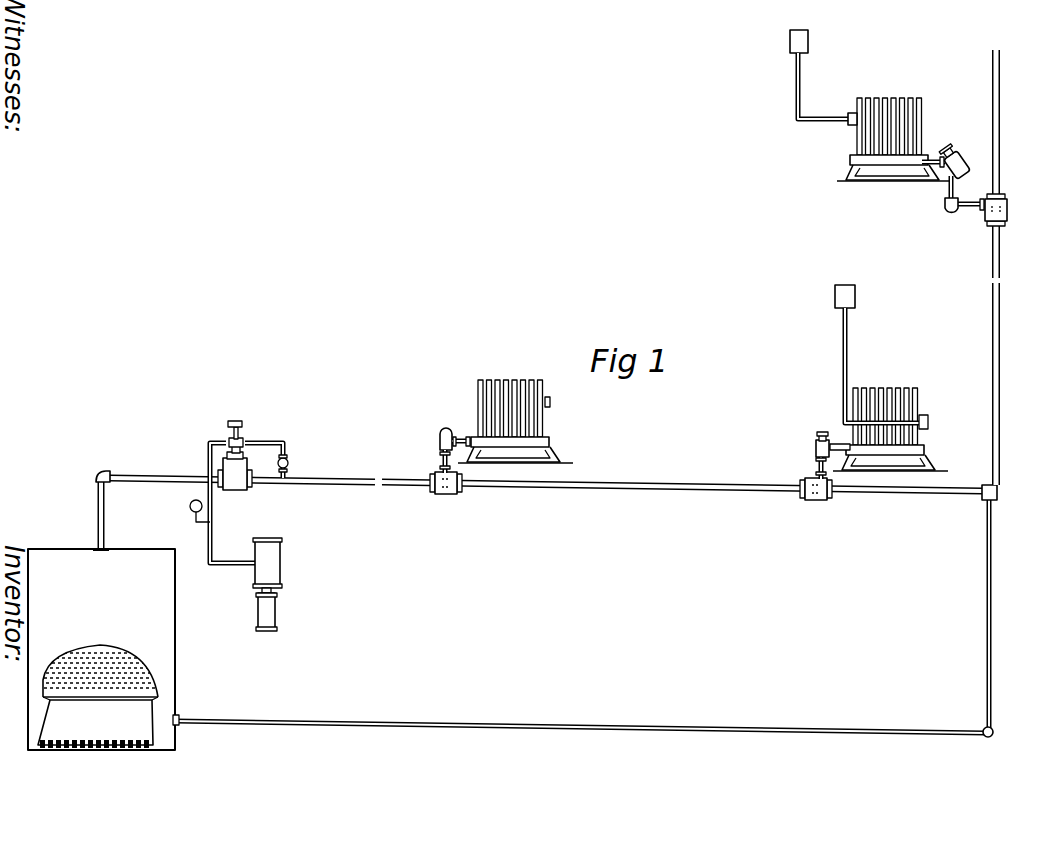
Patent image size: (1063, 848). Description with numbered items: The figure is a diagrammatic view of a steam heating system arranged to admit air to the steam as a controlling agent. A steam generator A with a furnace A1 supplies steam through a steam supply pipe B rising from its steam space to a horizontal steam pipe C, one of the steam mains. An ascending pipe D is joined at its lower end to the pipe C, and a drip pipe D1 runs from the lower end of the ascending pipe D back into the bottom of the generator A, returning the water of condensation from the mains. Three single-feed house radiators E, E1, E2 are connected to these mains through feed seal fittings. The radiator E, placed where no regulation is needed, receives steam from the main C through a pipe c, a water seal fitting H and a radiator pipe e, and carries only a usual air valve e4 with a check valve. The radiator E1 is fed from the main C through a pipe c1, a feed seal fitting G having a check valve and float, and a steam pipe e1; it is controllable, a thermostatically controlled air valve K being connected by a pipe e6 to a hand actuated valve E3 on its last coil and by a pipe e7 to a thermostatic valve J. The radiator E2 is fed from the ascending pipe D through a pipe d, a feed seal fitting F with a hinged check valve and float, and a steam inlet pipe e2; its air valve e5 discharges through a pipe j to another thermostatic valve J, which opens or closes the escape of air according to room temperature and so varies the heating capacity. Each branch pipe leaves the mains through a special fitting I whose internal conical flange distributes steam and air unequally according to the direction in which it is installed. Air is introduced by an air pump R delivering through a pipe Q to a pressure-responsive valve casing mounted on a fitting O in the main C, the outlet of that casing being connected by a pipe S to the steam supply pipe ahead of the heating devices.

The steam generator A is at (101, 649).
The furnace A1 is at (99, 696).
The steam supply pipe B is at (105, 519).
The horizontal steam pipe C is at (153, 476).
The fitting O is at (234, 490).
The pipe Q is at (210, 446).
The pipe S is at (265, 443).
The air pump R is at (282, 564).
The fitting I is at (448, 496).
The water seal fitting H is at (440, 437).
The pipe c is at (440, 458).
The radiator pipe e is at (465, 438).
The radiator E is at (515, 407).
The air valve e4 is at (551, 402).
The radiator E1 is at (900, 392).
The steam pipe e1 is at (834, 445).
The pipe c1 is at (820, 470).
The feed seal fitting G is at (816, 442).
The hand actuated valve E3 is at (928, 420).
The pipe e6 is at (924, 437).
The pipe e7 is at (848, 352).
The thermostatically controlled air valve K is at (924, 440).
The thermostatic valve J is at (790, 45).
The pipe j is at (822, 121).
The air valve e5 is at (852, 113).
The radiator E2 is at (894, 126).
The steam inlet pipe e2 is at (940, 160).
The feed seal fitting F is at (963, 157).
The pipe d is at (948, 195).
The ascending pipe D is at (1012, 267).
The drip pipe D1 is at (990, 607).